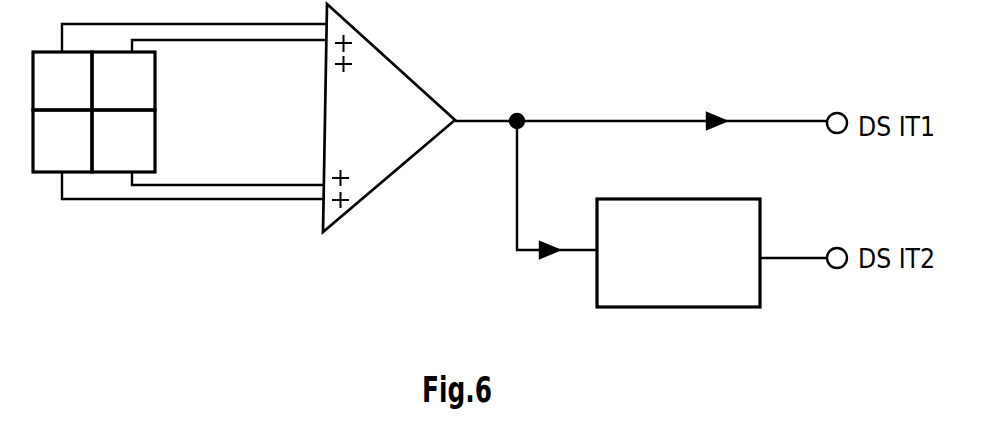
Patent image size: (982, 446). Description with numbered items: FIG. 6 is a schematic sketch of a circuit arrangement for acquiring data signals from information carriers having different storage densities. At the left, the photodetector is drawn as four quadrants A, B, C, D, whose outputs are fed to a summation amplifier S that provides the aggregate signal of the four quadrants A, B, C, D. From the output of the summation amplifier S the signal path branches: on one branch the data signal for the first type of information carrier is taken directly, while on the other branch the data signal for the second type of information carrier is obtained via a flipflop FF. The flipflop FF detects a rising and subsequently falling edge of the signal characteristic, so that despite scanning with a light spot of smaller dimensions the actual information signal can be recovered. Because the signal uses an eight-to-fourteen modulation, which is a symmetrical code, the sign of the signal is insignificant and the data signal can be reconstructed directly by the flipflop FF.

The quadrant A is at (62, 81).
The quadrant B is at (123, 81).
The quadrant C is at (123, 141).
The quadrant D is at (62, 141).
The summation amplifier S is at (389, 118).
The flipflop FF is at (678, 253).